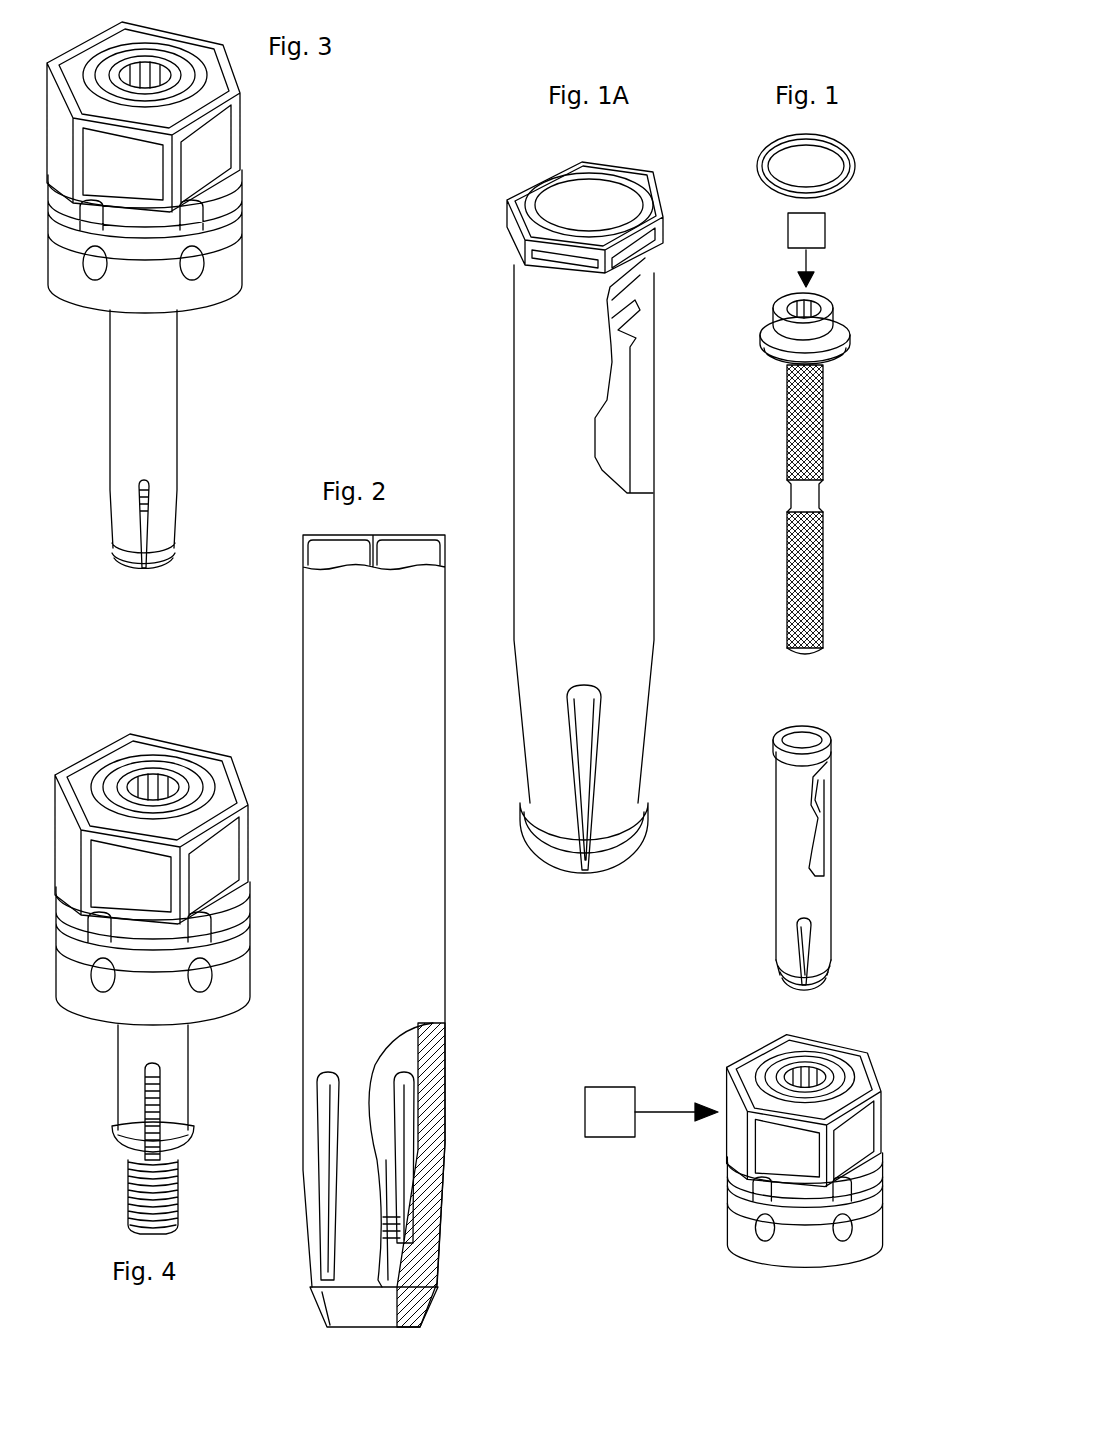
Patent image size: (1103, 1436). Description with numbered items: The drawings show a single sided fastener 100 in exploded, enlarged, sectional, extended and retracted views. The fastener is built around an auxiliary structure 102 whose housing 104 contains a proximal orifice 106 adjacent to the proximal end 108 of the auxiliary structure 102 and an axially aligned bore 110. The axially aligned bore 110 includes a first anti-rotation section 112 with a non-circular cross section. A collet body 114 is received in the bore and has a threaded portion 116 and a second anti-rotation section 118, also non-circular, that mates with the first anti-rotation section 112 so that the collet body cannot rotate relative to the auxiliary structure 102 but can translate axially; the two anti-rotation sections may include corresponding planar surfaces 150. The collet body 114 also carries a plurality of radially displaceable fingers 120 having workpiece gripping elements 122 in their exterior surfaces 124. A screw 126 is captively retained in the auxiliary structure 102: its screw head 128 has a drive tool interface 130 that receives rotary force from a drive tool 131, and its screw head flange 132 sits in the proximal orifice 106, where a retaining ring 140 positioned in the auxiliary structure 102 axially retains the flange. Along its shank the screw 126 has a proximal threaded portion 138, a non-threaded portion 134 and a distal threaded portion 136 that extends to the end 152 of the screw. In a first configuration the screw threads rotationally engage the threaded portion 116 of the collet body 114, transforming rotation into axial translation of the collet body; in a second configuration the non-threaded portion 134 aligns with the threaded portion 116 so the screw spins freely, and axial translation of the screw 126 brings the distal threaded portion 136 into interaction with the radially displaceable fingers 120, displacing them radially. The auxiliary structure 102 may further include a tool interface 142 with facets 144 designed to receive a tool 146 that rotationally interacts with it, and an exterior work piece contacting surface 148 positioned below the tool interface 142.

In FIG. 3, the single sided fastener 100 is at (268, 148).
In FIG. 4, the single sided fastener 100 is at (226, 727).
In FIG. 1, the single sided fastener 100 is at (927, 128).
In FIG. 3, the auxiliary structure 102 is at (257, 175).
In FIG. 4, the auxiliary structure 102 is at (262, 847).
In FIG. 1, the auxiliary structure 102 is at (917, 1035).
In FIG. 1, the housing 104 is at (672, 1092).
In FIG. 1, the proximal orifice 106 is at (777, 1070).
In FIG. 1, the proximal end 108 is at (818, 1028).
In FIG. 1, the axially aligned bore 110 is at (827, 1076).
In FIG. 1, the first anti-rotation section 112 is at (829, 1086).
In FIG. 3, the collet body 114 is at (200, 398).
In FIG. 4, the collet body 114 is at (200, 1058).
In FIG. 2, the collet body 114 is at (470, 530).
In FIG. 1A, the collet body 114 is at (668, 150).
In FIG. 1, the collet body 114 is at (875, 710).
In FIG. 1, the threaded portion 116 is at (833, 782).
In FIG. 1, the second anti-rotation section 118 is at (767, 735).
In FIG. 1, the radially displaceable fingers 120 is at (841, 937).
In FIG. 1, the workpiece gripping elements 122 is at (822, 982).
In FIG. 1, the exterior surfaces 124 is at (818, 954).
In FIG. 4, the screw 126 is at (199, 1200).
In FIG. 1, the screw 126 is at (892, 290).
In FIG. 1, the screw head 128 is at (772, 292).
In FIG. 1, the drive tool interface 130 is at (823, 304).
In FIG. 1, the drive tool 131 is at (826, 232).
In FIG. 1, the screw head flange 132 is at (846, 336).
In FIG. 1, the non-threaded portion 134 is at (773, 490).
In FIG. 1, the distal threaded portion 136 is at (771, 575).
In FIG. 1, the proximal threaded portion 138 is at (771, 427).
In FIG. 1, the retaining ring 140 is at (880, 130).
In FIG. 1, the tool interface 142 is at (709, 1079).
In FIG. 1, the facets 144 is at (738, 1100).
In FIG. 1, the tool 146 is at (612, 1087).
In FIG. 1, the exterior work piece contacting surface 148 is at (758, 1256).
In FIG. 1, the planar surfaces 150 is at (808, 724).
In FIG. 1, the end 152 is at (802, 661).